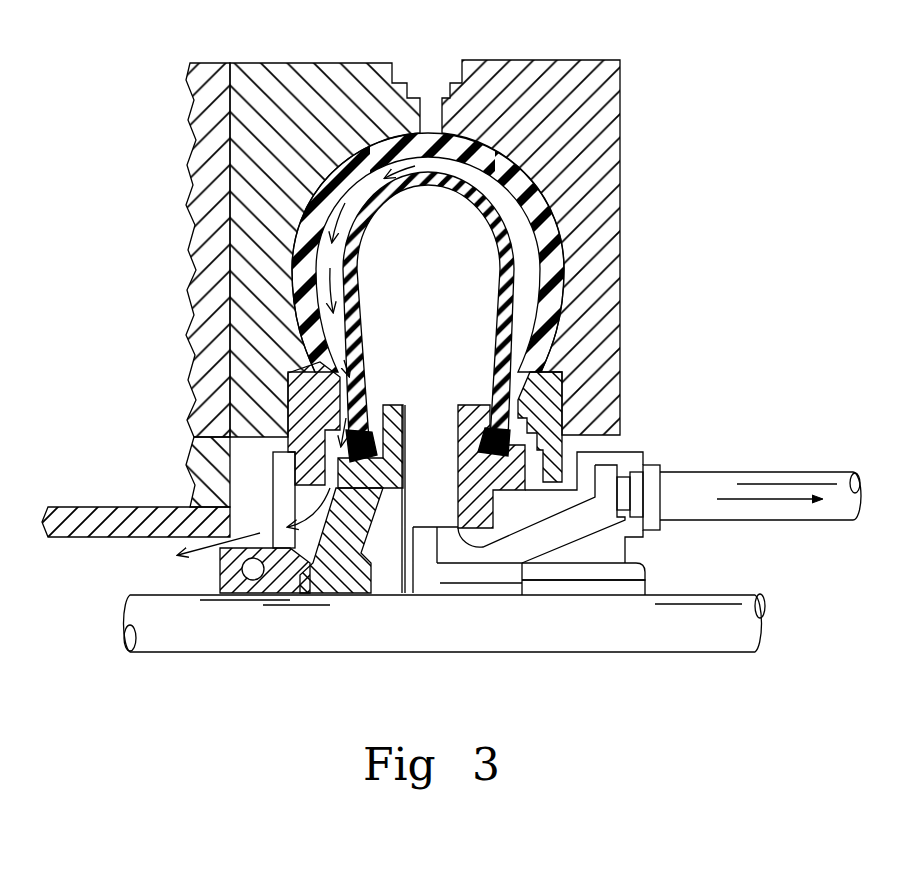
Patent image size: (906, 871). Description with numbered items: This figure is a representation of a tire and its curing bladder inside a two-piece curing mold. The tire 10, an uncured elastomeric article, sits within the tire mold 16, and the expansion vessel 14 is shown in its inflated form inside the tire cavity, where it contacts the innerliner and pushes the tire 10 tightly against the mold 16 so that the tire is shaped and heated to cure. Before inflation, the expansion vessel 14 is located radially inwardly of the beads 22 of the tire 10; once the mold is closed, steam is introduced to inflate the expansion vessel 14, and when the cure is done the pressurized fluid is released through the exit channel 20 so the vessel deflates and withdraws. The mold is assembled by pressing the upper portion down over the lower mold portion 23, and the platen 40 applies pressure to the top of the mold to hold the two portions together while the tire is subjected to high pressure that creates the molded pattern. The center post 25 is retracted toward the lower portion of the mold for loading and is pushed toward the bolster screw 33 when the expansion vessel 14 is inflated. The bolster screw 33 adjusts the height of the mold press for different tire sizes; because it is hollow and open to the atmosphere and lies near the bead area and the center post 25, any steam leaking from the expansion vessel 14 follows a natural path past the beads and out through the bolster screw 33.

The tire 10 is at (377, 132).
The expansion vessel 14 is at (363, 217).
The tire mold 16 is at (226, 150).
The platen 40 is at (197, 232).
The beads 22 is at (327, 369).
The lower mold portion 23 is at (603, 237).
The exit channel 20 is at (773, 477).
The bolster screw 33 is at (83, 507).
The center post 25 is at (165, 625).